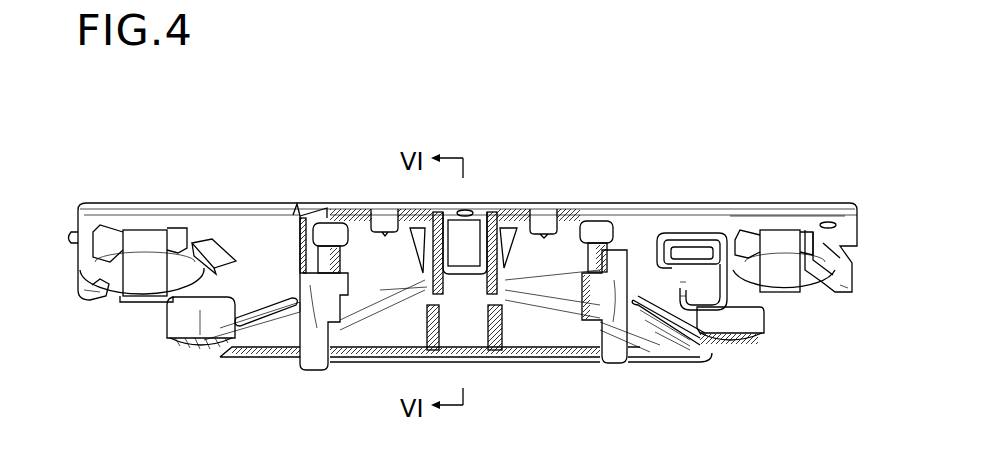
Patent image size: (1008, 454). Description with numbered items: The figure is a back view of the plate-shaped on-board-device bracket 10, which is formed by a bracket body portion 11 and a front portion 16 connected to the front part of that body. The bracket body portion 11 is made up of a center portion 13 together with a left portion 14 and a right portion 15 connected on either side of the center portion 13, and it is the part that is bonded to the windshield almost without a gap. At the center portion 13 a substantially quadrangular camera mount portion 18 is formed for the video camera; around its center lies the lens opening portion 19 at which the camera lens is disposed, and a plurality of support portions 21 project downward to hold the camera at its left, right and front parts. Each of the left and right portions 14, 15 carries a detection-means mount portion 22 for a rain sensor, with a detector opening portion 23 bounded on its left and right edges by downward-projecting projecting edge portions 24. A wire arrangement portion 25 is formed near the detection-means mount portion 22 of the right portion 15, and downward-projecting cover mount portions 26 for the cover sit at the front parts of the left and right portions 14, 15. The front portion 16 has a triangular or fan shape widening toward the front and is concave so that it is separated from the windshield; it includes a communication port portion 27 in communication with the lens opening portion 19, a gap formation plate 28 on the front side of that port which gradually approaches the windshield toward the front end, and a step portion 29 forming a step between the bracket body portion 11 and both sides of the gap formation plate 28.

The on-board-device bracket 10 is at (119, 168).
The bracket body portion 11 is at (250, 201).
The center portion 13 is at (566, 226).
The left portion 14 is at (731, 220).
The right portion 15 is at (210, 227).
The front portion 16 is at (355, 360).
The camera mount portion 18 is at (355, 206).
The lens opening portion 19 is at (492, 232).
The support portions 21 is at (326, 222).
The detection-means mount portion 22 is at (80, 291).
The detector opening portion 23 is at (143, 270).
The projecting edge portion 24 is at (70, 238).
The wire arrangement portion 25 is at (698, 258).
The cover mount portion 26 is at (727, 323).
The communication port portion 27 is at (468, 280).
The gap formation plate 28 is at (547, 333).
The step portion 29 is at (273, 328).